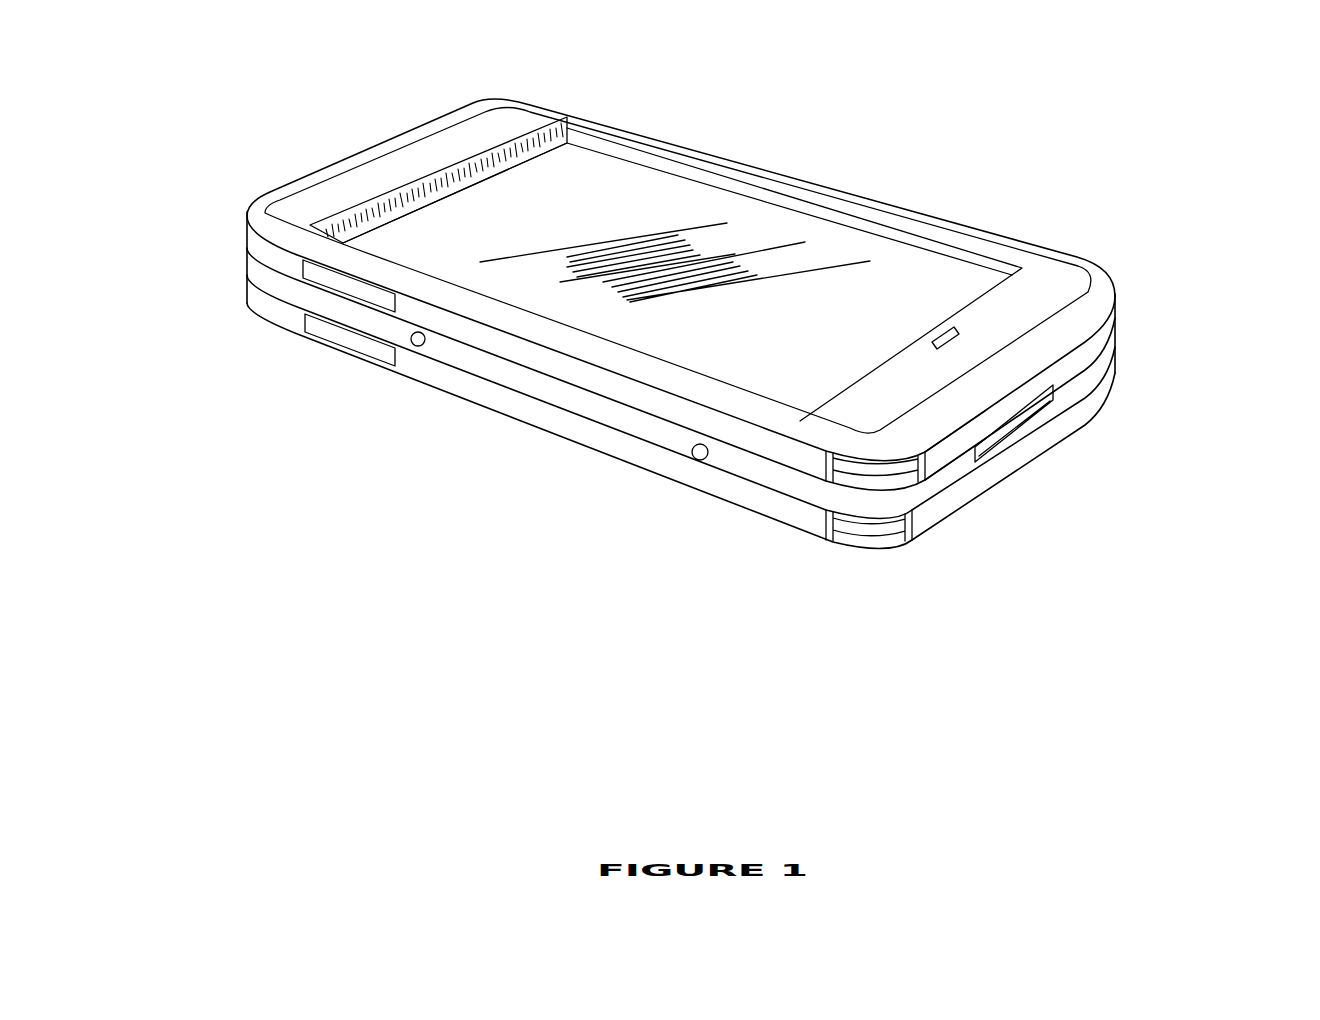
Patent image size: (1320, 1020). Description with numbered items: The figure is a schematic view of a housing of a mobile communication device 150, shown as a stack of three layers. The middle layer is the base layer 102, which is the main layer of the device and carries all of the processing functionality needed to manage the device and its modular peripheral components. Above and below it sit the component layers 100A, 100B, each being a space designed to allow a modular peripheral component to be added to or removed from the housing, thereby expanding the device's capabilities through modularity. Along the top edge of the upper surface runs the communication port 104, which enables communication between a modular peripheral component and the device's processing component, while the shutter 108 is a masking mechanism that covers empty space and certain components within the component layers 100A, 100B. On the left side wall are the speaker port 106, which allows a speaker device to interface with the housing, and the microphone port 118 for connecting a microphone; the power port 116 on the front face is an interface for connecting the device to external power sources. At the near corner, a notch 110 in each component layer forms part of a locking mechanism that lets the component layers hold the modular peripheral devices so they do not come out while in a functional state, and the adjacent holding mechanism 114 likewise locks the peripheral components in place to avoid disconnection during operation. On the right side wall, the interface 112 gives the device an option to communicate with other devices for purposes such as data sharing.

The communication port 104 is at (567, 120).
The speaker port 106 is at (333, 333).
The shutter 108 is at (1050, 273).
The component layer 100A is at (1107, 320).
The base layer 102 is at (1093, 357).
The component layer 100B is at (1078, 398).
The interface 112 is at (993, 443).
The holding mechanism 114 is at (957, 486).
The notch 110 is at (905, 522).
The power port 116 is at (700, 461).
The microphone port 118 is at (417, 347).
The housing of a mobile communication device 150 is at (946, 697).